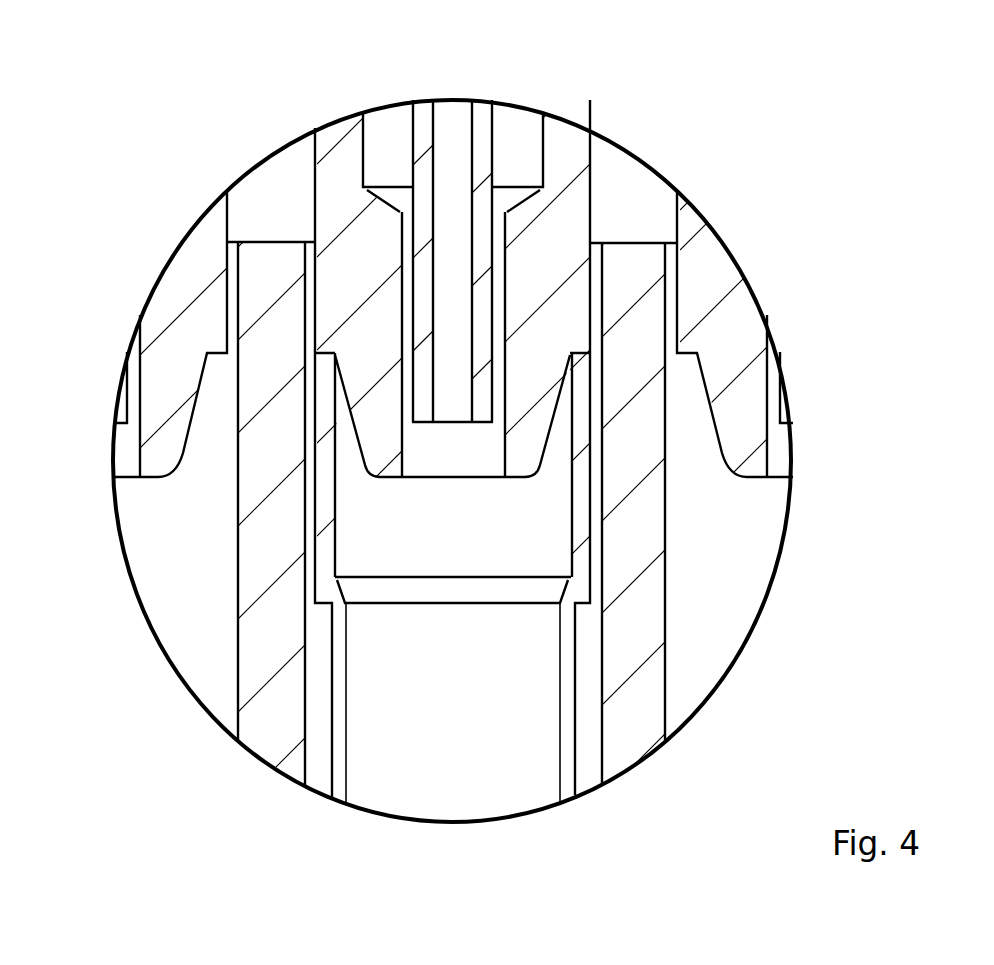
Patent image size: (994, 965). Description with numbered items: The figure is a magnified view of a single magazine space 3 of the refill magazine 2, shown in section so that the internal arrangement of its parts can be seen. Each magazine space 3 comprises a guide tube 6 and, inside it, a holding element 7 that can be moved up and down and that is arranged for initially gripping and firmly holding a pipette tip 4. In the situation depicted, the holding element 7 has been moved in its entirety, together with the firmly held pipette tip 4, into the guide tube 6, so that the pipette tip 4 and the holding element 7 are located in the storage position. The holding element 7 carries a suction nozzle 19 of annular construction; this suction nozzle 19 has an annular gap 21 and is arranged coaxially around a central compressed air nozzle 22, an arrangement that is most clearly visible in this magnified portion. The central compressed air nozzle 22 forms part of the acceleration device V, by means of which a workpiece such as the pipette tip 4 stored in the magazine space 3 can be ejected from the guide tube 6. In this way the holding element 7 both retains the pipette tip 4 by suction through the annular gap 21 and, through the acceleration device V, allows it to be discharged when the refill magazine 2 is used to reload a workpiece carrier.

The refill magazine 2 is at (640, 688).
The magazine space 3 is at (455, 857).
The pipette tip 4 is at (573, 760).
The guide tube 6 is at (322, 773).
The holding element 7 is at (365, 470).
The suction nozzle 19 is at (512, 147).
The annular gap 21 is at (412, 437).
The central compressed air nozzle 22 is at (455, 120).
The acceleration device V is at (457, 414).